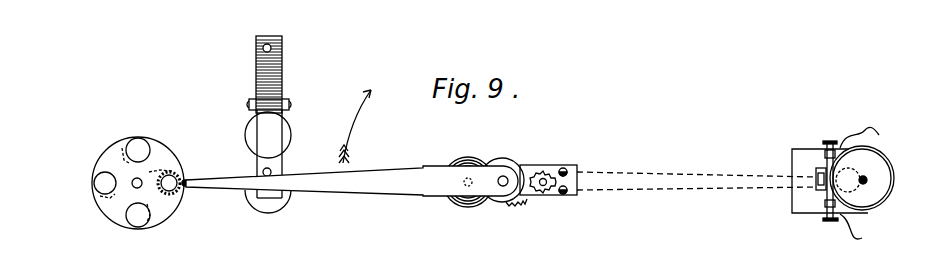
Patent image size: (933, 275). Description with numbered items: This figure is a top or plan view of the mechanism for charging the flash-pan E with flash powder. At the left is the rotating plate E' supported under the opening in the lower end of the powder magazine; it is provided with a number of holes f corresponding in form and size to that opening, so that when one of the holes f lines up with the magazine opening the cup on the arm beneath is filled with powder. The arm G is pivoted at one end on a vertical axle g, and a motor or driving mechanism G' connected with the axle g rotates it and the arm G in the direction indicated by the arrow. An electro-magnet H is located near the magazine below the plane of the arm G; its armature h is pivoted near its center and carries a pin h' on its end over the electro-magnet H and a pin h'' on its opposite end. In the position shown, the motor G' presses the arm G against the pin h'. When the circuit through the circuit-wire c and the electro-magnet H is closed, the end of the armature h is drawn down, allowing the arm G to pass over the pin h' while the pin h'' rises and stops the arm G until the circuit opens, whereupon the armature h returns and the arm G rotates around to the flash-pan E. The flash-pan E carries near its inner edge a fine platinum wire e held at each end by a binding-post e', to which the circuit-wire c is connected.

The crank disc E' is at (147, 183).
The holes f is at (142, 149).
The pin h'' is at (287, 65).
The electro-magnet H is at (291, 128).
The armature h is at (260, 148).
The pin h' is at (291, 161).
The arm G is at (352, 197).
The motor G' is at (468, 197).
The vertical axle g is at (507, 189).
The flash-pan E is at (850, 179).
The platinum wire e is at (798, 199).
The binding-post e' is at (825, 183).
The circuit-wire c is at (879, 134).